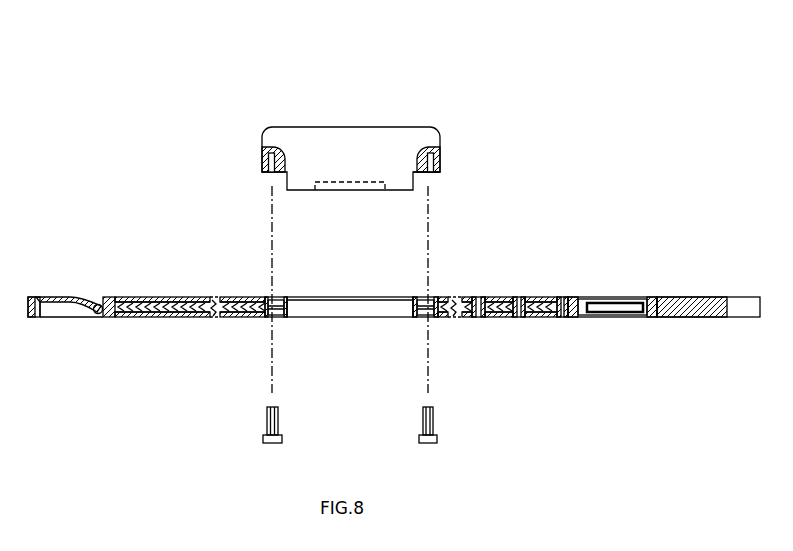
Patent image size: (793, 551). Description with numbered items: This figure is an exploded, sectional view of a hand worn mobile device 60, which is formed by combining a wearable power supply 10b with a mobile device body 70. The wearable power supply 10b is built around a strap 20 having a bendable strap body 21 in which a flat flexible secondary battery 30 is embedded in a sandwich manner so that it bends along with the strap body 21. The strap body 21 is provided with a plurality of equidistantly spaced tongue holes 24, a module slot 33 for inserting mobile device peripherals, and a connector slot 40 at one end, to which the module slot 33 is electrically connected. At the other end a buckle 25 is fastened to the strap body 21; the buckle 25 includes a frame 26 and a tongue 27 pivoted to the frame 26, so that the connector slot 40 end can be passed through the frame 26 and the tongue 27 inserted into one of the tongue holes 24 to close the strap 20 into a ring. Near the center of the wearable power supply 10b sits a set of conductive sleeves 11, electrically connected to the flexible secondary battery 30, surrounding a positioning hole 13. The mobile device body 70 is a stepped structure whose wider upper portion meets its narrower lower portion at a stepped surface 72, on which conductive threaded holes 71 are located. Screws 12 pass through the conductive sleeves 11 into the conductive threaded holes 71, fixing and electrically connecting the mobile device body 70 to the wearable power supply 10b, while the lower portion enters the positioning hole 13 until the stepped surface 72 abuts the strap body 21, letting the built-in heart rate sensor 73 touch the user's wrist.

The hand worn mobile device 60 is at (338, 108).
The mobile device body 70 is at (390, 138).
The conductive threaded holes 71 is at (264, 150).
The stepped surface 72 is at (425, 172).
The heart rate sensor 73 is at (350, 192).
The wearable power supply 10b is at (168, 286).
The conductive sleeves 11 is at (263, 295).
The screws 12 is at (267, 418).
The positioning hole 13 is at (367, 309).
The strap 20 is at (138, 297).
The strap body 21 is at (192, 318).
The tongue holes 24 is at (478, 297).
The buckle 25 is at (90, 216).
The frame 26 is at (28, 306).
The tongue 27 is at (65, 295).
The flexible secondary battery 30 is at (153, 313).
The module slot 33 is at (612, 297).
The connector slot 40 is at (710, 297).